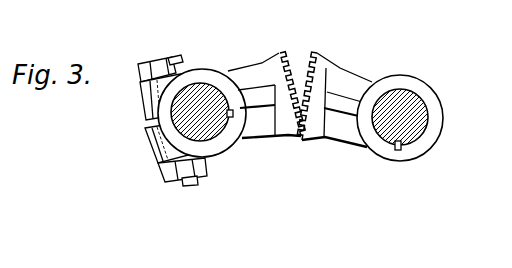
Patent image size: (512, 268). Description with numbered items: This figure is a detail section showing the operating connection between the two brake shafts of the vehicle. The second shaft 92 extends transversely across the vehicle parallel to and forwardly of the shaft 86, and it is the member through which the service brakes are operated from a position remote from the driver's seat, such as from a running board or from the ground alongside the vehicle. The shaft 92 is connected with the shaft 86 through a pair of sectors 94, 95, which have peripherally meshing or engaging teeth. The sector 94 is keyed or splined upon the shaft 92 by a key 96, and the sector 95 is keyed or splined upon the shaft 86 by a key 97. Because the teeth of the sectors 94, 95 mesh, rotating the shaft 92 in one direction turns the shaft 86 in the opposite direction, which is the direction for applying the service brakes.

The shaft 86 is at (413, 101).
The second shaft 92 is at (200, 88).
The sector 94 is at (230, 70).
The sector 95 is at (360, 70).
The key 96 is at (228, 130).
The key 97 is at (396, 151).